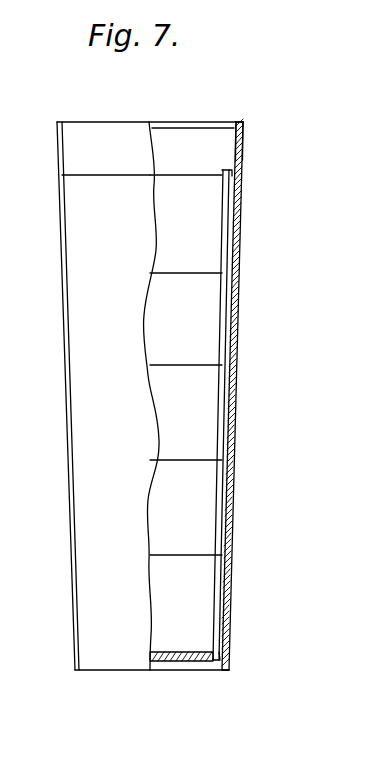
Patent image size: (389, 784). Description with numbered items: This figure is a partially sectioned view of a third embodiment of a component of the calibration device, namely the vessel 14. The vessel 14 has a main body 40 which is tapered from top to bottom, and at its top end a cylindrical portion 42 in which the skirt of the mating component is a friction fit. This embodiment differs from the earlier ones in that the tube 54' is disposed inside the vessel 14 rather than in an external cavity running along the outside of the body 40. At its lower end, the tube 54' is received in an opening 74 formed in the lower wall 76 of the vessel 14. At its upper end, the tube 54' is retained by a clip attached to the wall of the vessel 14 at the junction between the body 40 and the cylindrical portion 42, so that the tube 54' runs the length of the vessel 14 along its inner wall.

The vessel 14 is at (64, 483).
The main body 40 is at (237, 289).
The cylindrical portion 42 is at (244, 146).
The tube 54' is at (250, 394).
The opening 74 is at (216, 650).
The lower wall 76 is at (185, 662).